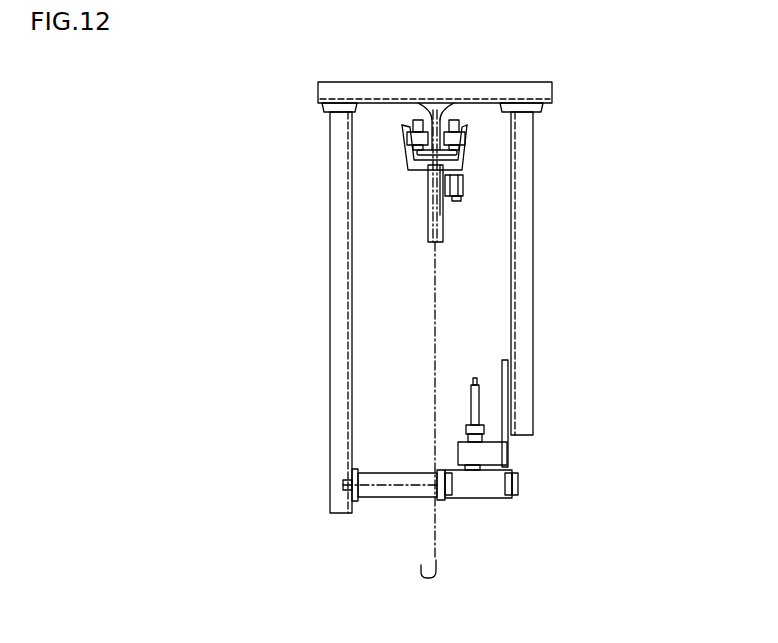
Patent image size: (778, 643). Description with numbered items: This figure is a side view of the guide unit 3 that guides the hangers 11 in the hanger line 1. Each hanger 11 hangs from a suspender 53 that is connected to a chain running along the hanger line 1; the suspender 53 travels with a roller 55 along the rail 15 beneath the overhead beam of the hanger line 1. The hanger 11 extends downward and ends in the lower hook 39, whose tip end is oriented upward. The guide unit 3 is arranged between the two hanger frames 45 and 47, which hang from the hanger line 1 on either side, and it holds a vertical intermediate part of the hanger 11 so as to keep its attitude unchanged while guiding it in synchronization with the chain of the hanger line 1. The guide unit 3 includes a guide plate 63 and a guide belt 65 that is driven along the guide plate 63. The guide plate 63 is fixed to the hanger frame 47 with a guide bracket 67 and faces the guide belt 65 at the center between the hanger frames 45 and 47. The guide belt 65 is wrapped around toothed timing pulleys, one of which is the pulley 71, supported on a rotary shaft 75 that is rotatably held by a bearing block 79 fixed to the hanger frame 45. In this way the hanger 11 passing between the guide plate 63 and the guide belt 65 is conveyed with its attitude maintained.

The hanger line 1 is at (567, 88).
The guide unit 3 is at (472, 525).
The hanger 11 is at (443, 284).
The rail 15 is at (433, 118).
The lower hook 39 is at (428, 580).
The hanger frame 45 is at (534, 303).
The hanger frame 47 is at (333, 329).
The suspender 53 is at (427, 190).
The roller 55 is at (418, 120).
The guide plate 63 is at (437, 470).
The guide belt 65 is at (518, 482).
The guide bracket 67 is at (385, 492).
The toothed timing pulley 71 is at (490, 494).
The rotary shaft 75 is at (474, 382).
The bearing block 79 is at (490, 457).